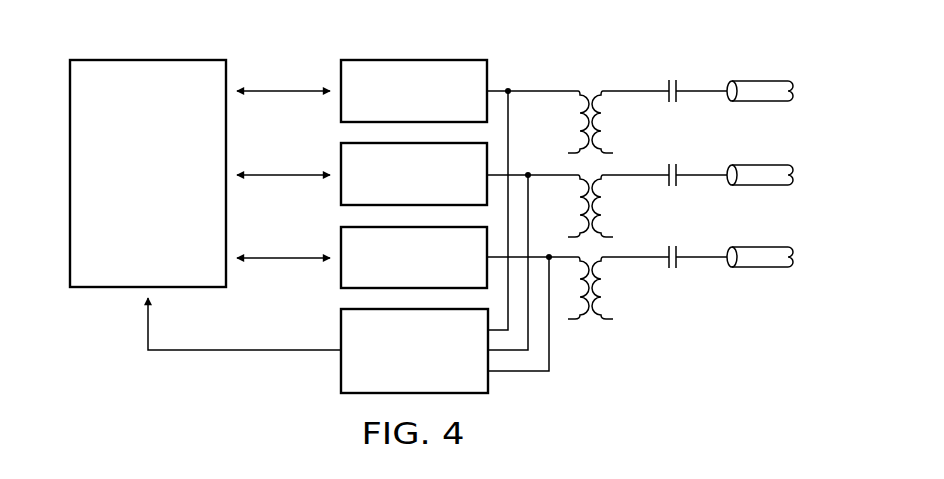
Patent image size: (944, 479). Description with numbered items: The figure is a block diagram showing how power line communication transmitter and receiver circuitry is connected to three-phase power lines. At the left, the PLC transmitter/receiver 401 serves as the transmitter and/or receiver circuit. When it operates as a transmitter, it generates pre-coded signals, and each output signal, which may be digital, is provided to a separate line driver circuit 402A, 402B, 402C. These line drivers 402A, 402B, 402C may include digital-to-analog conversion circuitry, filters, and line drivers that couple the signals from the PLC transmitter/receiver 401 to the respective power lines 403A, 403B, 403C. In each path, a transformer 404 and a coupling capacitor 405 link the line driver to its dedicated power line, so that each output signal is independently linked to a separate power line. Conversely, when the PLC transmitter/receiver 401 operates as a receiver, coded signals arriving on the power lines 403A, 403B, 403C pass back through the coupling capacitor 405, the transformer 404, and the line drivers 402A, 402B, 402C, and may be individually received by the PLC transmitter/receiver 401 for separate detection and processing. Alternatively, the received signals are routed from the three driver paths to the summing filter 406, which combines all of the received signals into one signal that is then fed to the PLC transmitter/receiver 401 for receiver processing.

The PLC transmitter/receiver 401 is at (131, 232).
The line driver circuit 402A is at (341, 73).
The line driver circuit 402B is at (341, 156).
The line driver circuit 402C is at (341, 272).
The power line 403A is at (760, 80).
The power line 403B is at (760, 164).
The power line 403C is at (760, 268).
The transformer 404 is at (591, 86).
The coupling capacitor 405 is at (674, 77).
The summing filter 406 is at (341, 360).